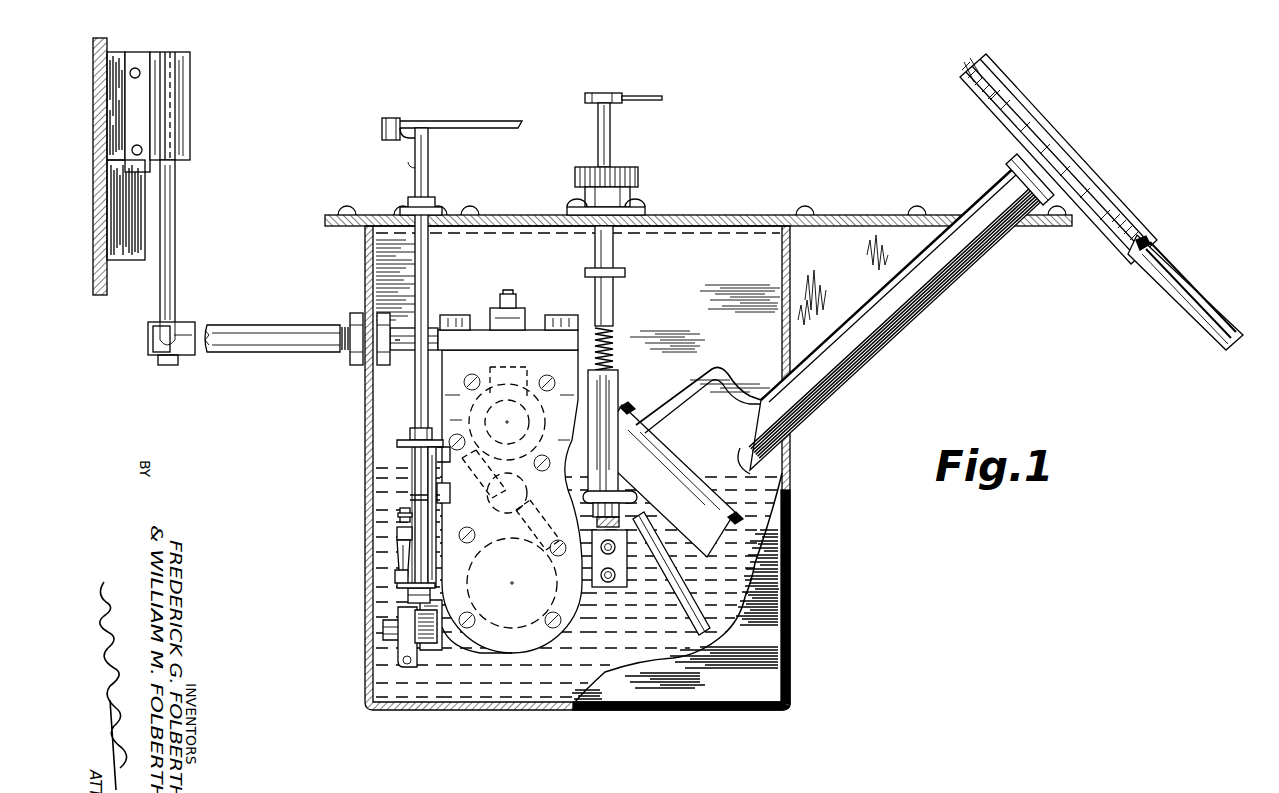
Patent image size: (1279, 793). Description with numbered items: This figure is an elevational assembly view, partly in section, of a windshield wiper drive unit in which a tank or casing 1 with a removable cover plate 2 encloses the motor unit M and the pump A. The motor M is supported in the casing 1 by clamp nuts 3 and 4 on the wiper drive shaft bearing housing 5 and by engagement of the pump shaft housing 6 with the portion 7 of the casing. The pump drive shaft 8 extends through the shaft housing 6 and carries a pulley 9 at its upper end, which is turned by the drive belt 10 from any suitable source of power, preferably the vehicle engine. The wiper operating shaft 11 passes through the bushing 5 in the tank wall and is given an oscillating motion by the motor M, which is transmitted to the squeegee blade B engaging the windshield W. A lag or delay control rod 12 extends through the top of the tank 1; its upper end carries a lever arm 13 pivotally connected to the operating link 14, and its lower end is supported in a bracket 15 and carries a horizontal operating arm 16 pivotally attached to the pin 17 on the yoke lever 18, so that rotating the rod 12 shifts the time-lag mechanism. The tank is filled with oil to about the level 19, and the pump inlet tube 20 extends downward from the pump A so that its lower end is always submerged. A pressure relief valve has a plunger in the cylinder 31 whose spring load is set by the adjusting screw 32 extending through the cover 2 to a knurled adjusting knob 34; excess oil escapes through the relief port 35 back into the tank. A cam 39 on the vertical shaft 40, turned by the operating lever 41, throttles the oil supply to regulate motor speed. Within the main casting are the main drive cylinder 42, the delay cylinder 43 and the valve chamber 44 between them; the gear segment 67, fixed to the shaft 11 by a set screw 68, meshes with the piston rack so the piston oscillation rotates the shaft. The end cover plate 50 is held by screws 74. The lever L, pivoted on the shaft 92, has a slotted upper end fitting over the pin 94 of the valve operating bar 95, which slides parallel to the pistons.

The tank or casing 1 is at (789, 481).
The removable cover plate 2 is at (693, 217).
The clamp nut 3 is at (383, 366).
The clamp nut 4 is at (357, 366).
The wiper drive shaft bearing housing 5 is at (408, 338).
The pump shaft housing 6 is at (883, 313).
The portion of the casing 7 is at (926, 320).
The drive shaft of the pump 8 is at (1027, 158).
The pulley 9 is at (1015, 93).
The drive belt 10 is at (1174, 299).
The wiper operating shaft 11 is at (265, 337).
The lag or delay control rod 12 is at (430, 184).
The lever arm 13 is at (403, 138).
The operating link 14 is at (492, 128).
The bracket 15 is at (398, 440).
The operating arm 16 is at (410, 522).
The pin 17 is at (420, 510).
The yoke lever 18 is at (400, 534).
The liquid level 19 is at (794, 454).
The pump inlet tube 20 is at (680, 586).
The cylinder 31 is at (618, 459).
The adjusting screw 32 is at (613, 301).
The knurled adjusting knob 34 is at (637, 172).
The relief port 35 is at (619, 463).
The cam 39 is at (626, 267).
The vertical shaft 40 is at (611, 130).
The operating lever 41 is at (637, 93).
The main drive chamber or cylinder 42 is at (493, 413).
The valve actuating or delay chamber or cylinder 43 is at (512, 583).
The valve chamber 44 is at (511, 507).
The end cover plate 50 is at (558, 647).
The gear segment 67 is at (520, 310).
The set screw 68 is at (507, 295).
The screw 74 is at (564, 628).
The shaft 92 is at (383, 627).
The pin 94 is at (420, 493).
The valve operating bar 95 is at (448, 492).
The pump A is at (728, 405).
The windshield wiper squeegee blade B is at (140, 212).
The windshield W is at (107, 280).
The motor unit M is at (550, 413).
The lever L is at (433, 547).